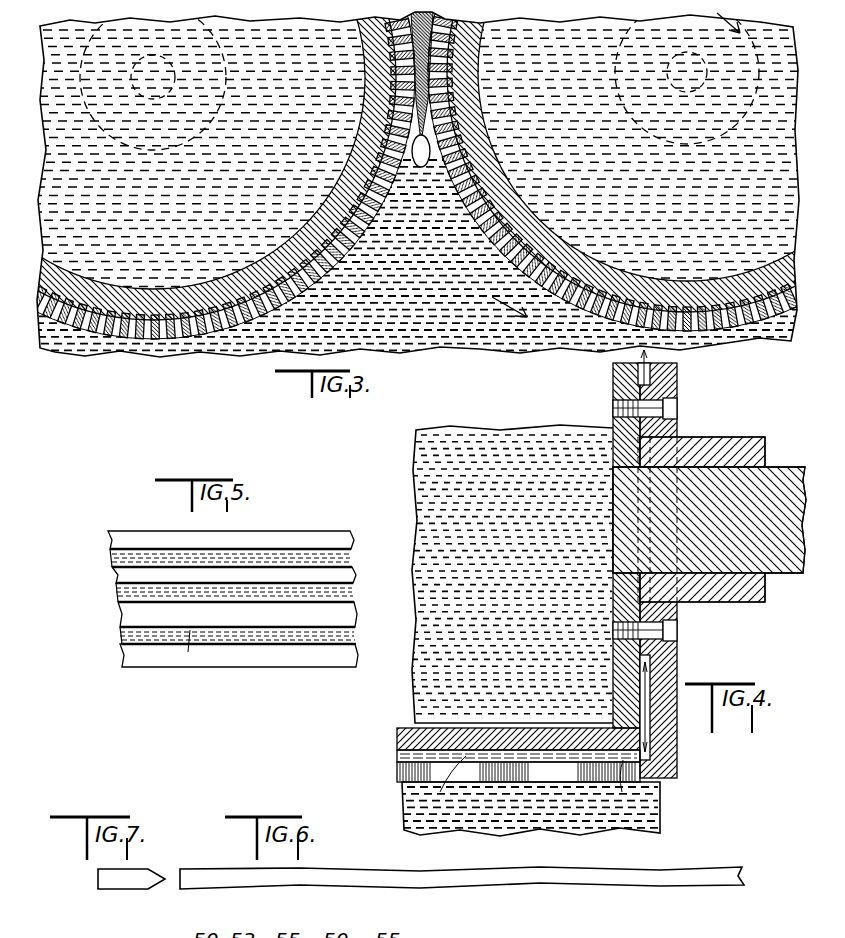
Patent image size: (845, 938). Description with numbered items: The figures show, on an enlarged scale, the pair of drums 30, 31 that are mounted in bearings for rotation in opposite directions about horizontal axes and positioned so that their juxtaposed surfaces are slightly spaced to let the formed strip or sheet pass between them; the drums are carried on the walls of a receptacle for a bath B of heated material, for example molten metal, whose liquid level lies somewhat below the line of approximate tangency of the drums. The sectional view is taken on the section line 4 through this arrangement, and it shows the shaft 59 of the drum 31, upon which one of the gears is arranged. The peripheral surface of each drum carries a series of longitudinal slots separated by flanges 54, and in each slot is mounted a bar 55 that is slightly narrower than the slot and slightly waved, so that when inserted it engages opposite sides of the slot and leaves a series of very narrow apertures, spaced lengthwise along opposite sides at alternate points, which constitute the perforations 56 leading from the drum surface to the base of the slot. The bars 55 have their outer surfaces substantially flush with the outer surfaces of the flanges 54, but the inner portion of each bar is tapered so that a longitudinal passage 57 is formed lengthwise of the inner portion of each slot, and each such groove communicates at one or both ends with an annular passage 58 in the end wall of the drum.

In FIG. 3, the drum 30 is at (52, 278).
In FIG. 3, the drum 31 is at (785, 263).
In FIG. 4, the drum 31 is at (407, 734).
In FIG. 3, the section line 4— 4 is at (622, 172).
In FIG. 3, the flange 54 is at (127, 340).
In FIG. 5, the flange 54 is at (123, 613).
In FIG. 3, the bar 55 is at (167, 337).
In FIG. 4, the bar 55 is at (397, 773).
In FIG. 5, the bar 55 is at (115, 595).
In FIG. 6, the bar 55 is at (468, 876).
In FIG. 7, the bar 55 is at (113, 886).
In FIG. 5, the perforations 56 is at (230, 643).
In FIG. 4, the longitudinal passage 57 is at (400, 757).
In FIG. 4, the annular passage 58 is at (647, 683).
In FIG. 4, the shaft 59 is at (778, 483).
In FIG. 3, the bath B is at (447, 340).
In FIG. 4, the bath B is at (400, 808).